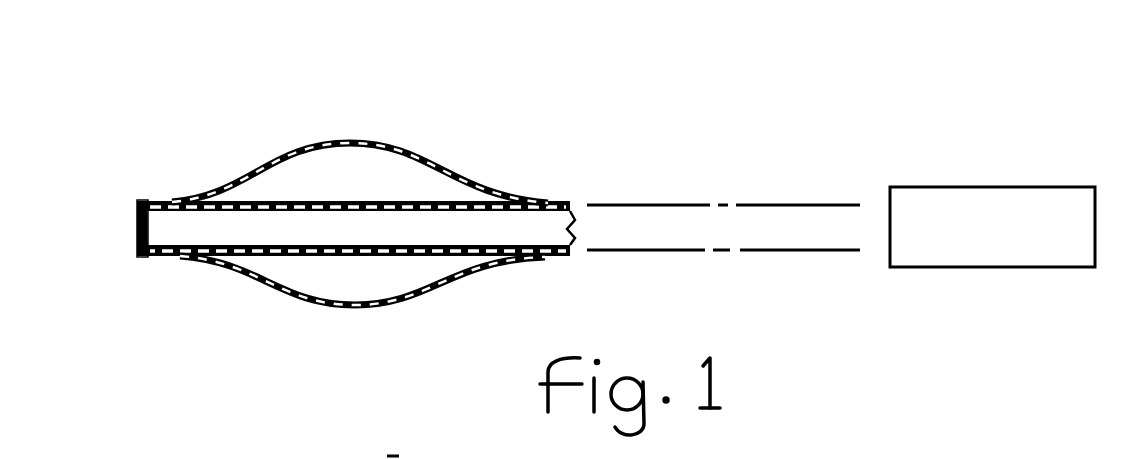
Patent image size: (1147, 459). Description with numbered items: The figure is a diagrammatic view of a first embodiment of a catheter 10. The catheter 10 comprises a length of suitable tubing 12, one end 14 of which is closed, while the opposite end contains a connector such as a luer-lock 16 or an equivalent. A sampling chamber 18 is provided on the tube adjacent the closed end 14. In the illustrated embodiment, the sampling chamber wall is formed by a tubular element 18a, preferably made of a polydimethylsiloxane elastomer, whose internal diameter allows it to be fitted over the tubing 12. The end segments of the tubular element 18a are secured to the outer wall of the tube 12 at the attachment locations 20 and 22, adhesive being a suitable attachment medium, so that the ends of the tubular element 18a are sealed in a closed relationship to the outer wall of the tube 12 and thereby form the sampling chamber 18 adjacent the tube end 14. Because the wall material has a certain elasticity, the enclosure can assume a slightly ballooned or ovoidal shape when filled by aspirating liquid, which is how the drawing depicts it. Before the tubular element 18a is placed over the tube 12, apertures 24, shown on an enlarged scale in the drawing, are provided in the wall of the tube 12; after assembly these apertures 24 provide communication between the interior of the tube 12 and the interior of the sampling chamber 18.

The catheter 10 is at (602, 228).
The tubing 12 is at (672, 255).
The closed end 14 is at (143, 217).
The luer-lock 16 is at (1093, 267).
The sampling chamber 18 is at (452, 298).
The tubular element 18a is at (310, 147).
The attachment location 20 is at (138, 254).
The attachment location 22 is at (553, 203).
The apertures 24 is at (273, 200).